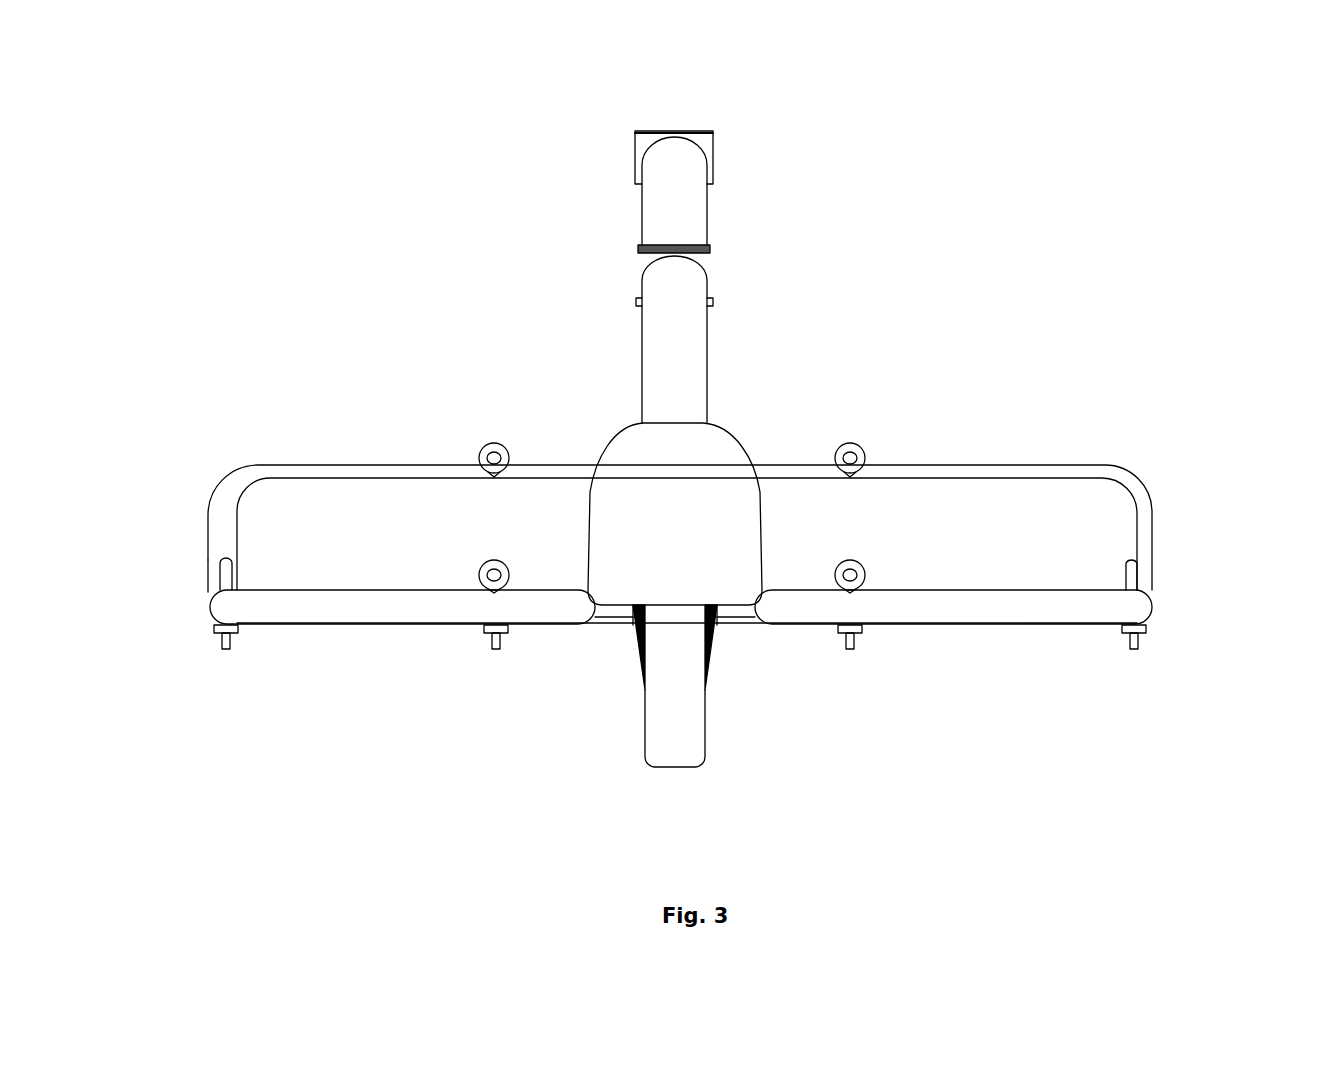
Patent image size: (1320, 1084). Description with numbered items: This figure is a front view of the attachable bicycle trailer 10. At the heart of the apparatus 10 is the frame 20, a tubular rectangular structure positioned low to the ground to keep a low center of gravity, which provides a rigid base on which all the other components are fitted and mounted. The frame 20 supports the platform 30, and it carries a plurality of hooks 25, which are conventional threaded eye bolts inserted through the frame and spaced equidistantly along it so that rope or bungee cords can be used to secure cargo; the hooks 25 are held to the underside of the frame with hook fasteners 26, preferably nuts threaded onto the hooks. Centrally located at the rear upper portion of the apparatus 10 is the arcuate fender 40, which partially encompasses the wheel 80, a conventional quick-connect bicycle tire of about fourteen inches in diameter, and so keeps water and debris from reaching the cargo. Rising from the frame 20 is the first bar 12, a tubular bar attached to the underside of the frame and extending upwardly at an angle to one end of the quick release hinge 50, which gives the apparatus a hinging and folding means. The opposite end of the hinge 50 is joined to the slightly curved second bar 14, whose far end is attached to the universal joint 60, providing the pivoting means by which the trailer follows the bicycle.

The attachable bicycle trailer 10 is at (945, 228).
The first bar 12 is at (695, 345).
The second bar 14 is at (655, 203).
The frame 20 is at (238, 608).
The hooks 25 is at (486, 566).
The hook fasteners 26 is at (490, 640).
The platform 30 is at (540, 497).
The fender 40 is at (622, 458).
The quick release hinge 50 is at (641, 252).
The universal joint 60 is at (713, 173).
The wheel 80 is at (690, 745).